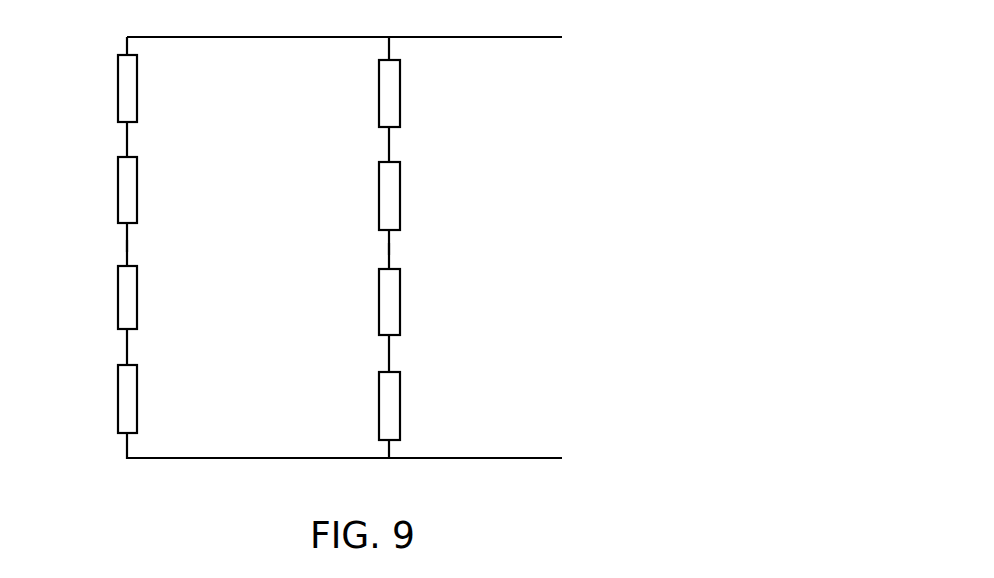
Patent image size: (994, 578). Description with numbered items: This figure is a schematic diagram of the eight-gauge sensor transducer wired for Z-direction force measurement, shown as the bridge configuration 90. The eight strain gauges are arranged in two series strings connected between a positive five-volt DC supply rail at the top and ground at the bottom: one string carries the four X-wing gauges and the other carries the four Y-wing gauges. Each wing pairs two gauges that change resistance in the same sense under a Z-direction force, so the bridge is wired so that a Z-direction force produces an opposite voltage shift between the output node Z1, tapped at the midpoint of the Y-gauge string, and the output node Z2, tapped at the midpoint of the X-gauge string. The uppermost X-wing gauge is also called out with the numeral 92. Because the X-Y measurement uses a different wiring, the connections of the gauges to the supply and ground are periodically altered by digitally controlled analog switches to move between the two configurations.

The bridge configuration 90 is at (103, 347).
The strain gauge resistor SGX-4 92 is at (137, 97).
The Z1 output node Z1 is at (389, 249).
The Z2 output node Z2 is at (127, 246).